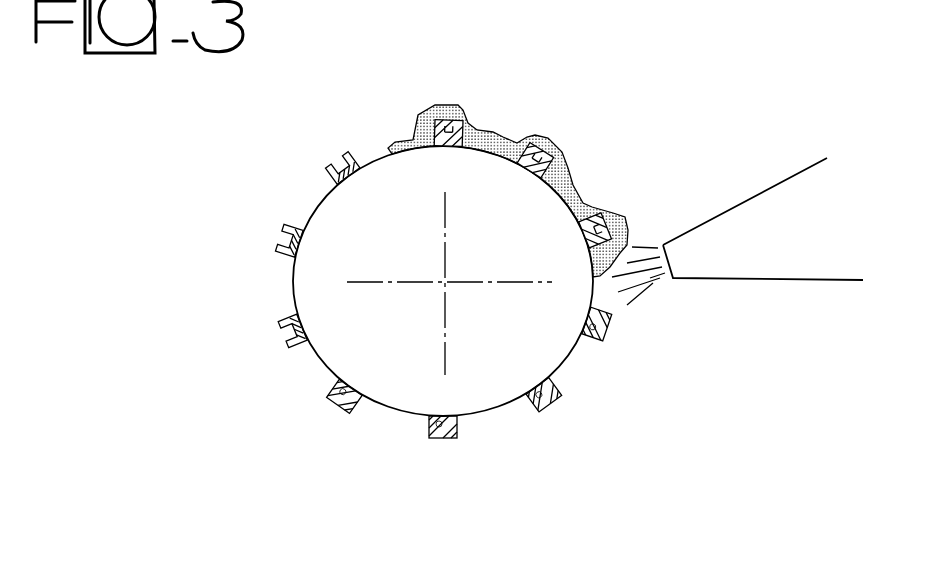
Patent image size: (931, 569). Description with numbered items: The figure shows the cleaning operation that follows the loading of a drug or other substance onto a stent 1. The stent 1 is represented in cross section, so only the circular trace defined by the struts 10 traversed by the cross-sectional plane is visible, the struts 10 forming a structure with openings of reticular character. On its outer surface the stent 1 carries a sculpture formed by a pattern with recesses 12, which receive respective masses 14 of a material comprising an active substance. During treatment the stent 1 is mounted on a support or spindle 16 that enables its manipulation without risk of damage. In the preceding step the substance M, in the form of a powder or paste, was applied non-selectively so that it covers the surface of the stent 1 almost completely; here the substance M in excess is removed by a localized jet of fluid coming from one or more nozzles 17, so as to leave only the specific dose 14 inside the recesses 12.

The stent 1 is at (305, 192).
The struts 10 is at (303, 240).
The recesses 12 is at (342, 407).
The masses 14 is at (452, 445).
The support or spindle 16 is at (493, 190).
The substance M is at (573, 186).
The nozzles 17 is at (776, 266).